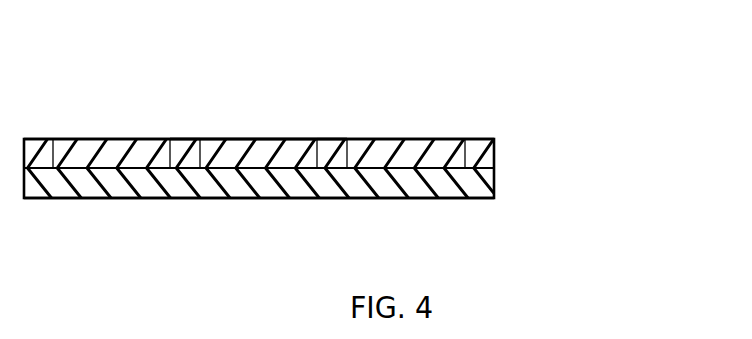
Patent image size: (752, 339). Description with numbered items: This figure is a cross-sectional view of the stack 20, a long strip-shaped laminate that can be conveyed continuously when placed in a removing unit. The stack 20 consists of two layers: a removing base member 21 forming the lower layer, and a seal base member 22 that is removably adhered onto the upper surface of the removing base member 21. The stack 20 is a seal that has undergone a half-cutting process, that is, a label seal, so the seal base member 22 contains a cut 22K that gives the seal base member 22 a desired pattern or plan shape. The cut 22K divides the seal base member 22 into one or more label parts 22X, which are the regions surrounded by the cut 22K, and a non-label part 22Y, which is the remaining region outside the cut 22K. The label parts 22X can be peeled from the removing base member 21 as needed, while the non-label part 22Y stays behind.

The stack 20 is at (422, 93).
The removing base member 21 is at (262, 183).
The seal base member 22 is at (365, 58).
The cut 22K is at (172, 138).
The label part 22X is at (256, 150).
The non-label part 22Y is at (329, 150).